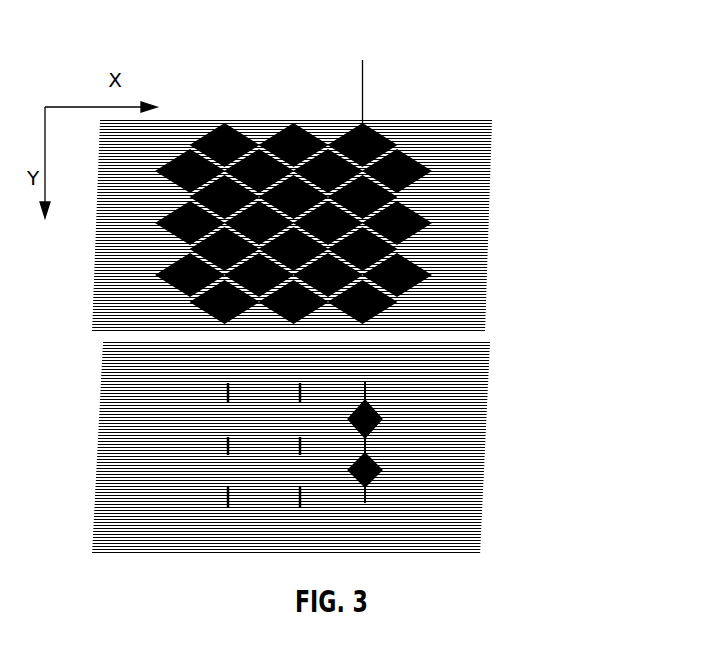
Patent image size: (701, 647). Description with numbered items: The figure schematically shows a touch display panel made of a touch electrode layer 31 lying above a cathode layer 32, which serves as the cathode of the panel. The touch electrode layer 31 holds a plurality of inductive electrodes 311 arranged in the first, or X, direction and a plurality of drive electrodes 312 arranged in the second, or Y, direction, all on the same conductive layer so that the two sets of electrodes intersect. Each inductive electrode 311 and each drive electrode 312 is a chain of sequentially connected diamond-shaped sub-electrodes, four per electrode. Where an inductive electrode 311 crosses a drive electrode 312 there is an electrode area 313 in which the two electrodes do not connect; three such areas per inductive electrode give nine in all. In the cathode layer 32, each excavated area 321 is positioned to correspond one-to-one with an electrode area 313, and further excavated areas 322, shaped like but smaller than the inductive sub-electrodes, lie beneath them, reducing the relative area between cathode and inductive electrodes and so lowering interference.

The touch electrode layer 31 is at (467, 148).
The inductive electrode 311 is at (361, 66).
The drive electrode 312 is at (436, 220).
The electrode area 313 is at (434, 275).
The cathode layer 32 is at (455, 382).
The excavated area 321 is at (365, 497).
The excavated area 322 is at (382, 419).